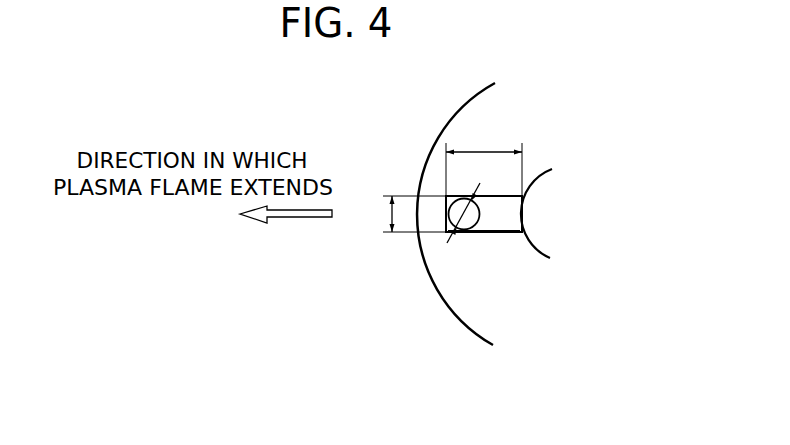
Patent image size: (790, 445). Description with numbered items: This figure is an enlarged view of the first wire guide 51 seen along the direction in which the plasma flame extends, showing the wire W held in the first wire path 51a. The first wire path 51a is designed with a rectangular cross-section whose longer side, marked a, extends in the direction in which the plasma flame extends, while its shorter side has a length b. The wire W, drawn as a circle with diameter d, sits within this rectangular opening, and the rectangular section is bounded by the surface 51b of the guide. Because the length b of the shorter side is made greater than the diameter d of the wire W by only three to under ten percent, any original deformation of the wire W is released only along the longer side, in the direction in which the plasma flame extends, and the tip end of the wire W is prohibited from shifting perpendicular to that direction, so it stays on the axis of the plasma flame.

The first wire guide 51 is at (457, 284).
The first wire path 51a is at (488, 232).
The groove 51b is at (505, 232).
The wire W is at (452, 201).
The groove width a is at (484, 163).
The length of shorter side b is at (407, 214).
The diameter of the wire d is at (479, 213).